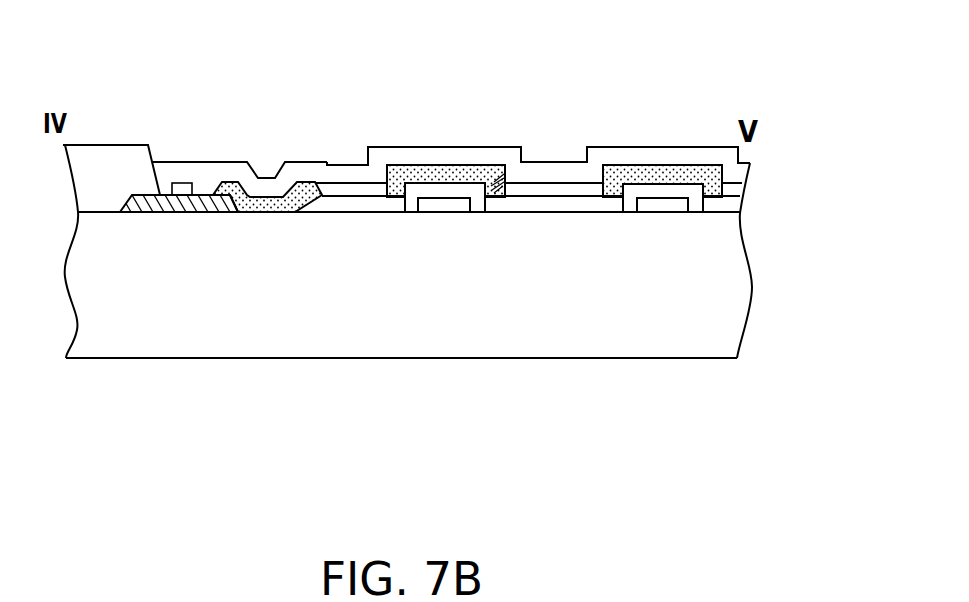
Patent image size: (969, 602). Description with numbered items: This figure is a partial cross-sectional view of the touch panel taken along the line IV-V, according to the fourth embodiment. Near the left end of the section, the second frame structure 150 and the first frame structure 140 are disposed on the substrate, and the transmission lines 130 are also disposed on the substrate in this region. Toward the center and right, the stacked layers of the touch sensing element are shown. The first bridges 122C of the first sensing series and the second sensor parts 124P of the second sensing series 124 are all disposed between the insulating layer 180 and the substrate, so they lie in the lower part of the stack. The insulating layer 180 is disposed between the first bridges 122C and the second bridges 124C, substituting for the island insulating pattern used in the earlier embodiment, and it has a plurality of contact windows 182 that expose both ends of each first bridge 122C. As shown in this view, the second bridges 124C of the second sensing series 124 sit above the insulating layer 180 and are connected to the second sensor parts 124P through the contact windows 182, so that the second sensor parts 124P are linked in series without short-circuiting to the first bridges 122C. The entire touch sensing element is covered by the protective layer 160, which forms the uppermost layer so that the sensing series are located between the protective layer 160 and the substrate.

The second frame structure 150 is at (101, 200).
The first frame structure 140 is at (197, 212).
The transmission lines 130 is at (262, 207).
The insulating layer 180 is at (370, 188).
The first bridges 122C is at (443, 203).
The second sensing series 124 is at (443, 76).
The second sensor parts 124P is at (345, 168).
The second bridges 124C is at (435, 172).
The protective layer 160 is at (202, 170).
The contact windows 182 is at (505, 175).